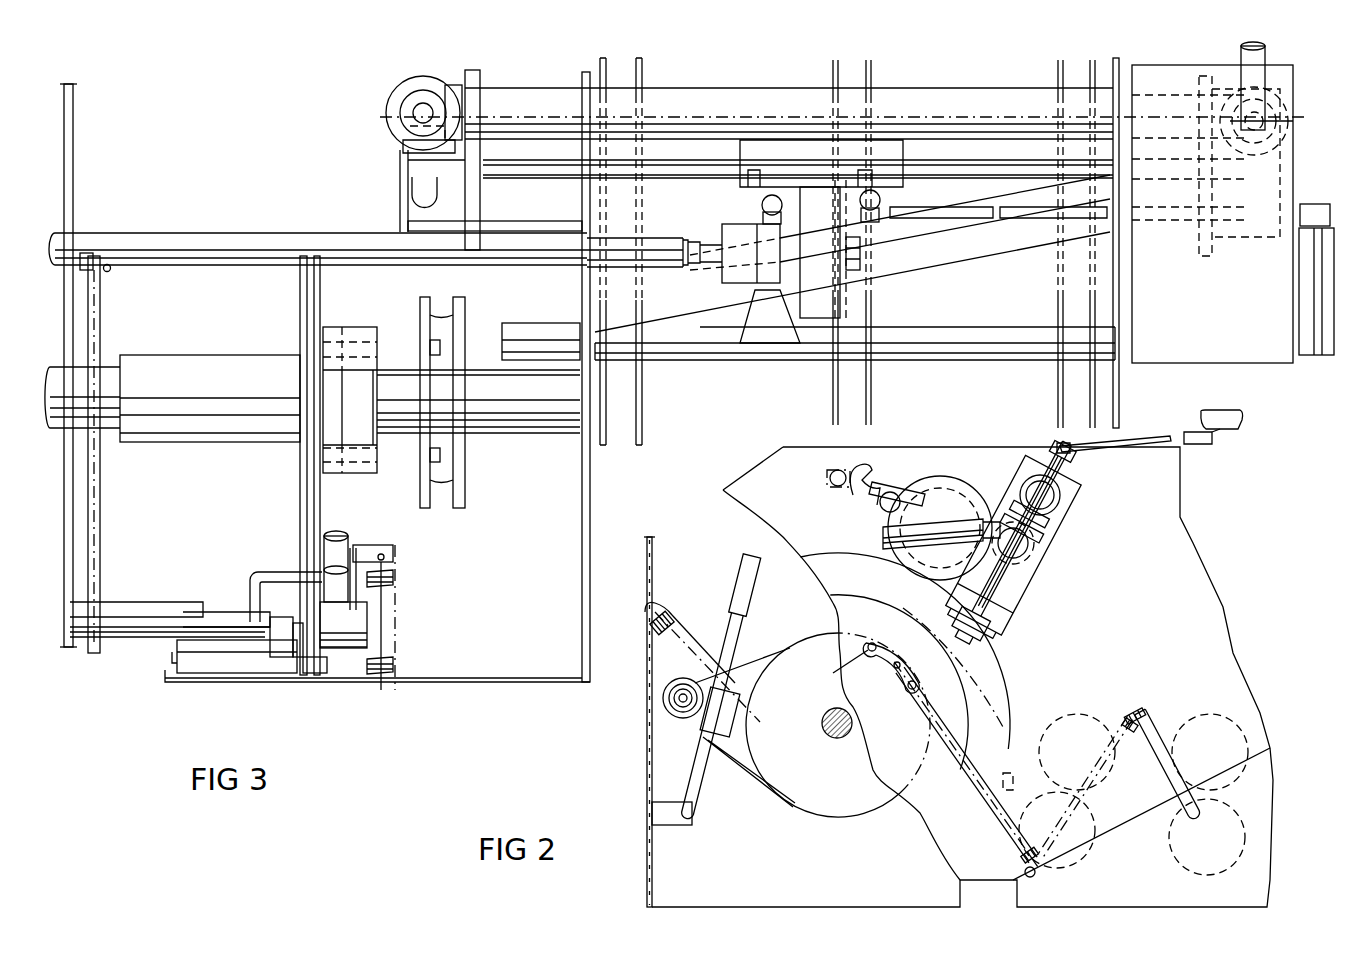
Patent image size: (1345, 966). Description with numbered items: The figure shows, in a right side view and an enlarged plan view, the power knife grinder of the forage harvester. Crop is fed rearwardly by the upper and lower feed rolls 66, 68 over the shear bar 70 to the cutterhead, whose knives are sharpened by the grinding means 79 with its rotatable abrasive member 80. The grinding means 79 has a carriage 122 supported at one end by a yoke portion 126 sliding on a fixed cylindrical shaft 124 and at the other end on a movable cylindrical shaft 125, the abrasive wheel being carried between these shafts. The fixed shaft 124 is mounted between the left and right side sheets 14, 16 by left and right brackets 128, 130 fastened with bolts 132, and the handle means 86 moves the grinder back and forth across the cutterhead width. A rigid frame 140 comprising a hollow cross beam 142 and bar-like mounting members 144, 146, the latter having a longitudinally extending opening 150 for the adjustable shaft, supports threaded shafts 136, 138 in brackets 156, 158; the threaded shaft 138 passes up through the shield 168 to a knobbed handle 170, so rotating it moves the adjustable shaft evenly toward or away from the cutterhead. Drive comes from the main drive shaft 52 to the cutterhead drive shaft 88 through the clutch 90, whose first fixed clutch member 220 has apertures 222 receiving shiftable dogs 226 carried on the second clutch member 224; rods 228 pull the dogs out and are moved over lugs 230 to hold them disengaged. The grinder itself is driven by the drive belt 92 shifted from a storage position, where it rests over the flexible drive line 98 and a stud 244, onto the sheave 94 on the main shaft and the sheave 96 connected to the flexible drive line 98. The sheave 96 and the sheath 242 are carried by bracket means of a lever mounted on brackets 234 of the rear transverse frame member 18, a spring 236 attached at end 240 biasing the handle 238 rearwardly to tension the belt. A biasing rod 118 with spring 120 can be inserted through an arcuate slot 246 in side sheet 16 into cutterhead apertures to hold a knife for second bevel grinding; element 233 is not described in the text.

In FIG. 3, the left side sheet 14 is at (575, 286).
In FIG. 3, the right side sheet 16 is at (1119, 294).
In FIG. 2, the right side sheet 16 is at (1197, 573).
In FIG. 3, the rear transverse frame member 18 is at (480, 685).
In FIG. 2, the rear transverse frame member 18 is at (655, 709).
In FIG. 3, the main drive shaft 52 is at (215, 362).
In FIG. 2, the upper feed roll 66 is at (1072, 713).
In FIG. 2, the lower feed roll 68 is at (1072, 866).
In FIG. 2, the shear bar 70 is at (1024, 782).
In FIG. 3, the grinding means 79 is at (686, 223).
In FIG. 3, the rotatable abrasive member 80 is at (818, 320).
In FIG. 3, the handle means 86 is at (1311, 368).
In FIG. 2, the handle means 86 is at (872, 538).
In FIG. 3, the cutterhead drive shaft 88 is at (555, 438).
In FIG. 3, the clutch 90 is at (395, 291).
In FIG. 3, the grinding means drive belt 92 is at (97, 533).
In FIG. 3, the sheave 94 is at (298, 285).
In FIG. 3, the sheave 96 is at (318, 676).
In FIG. 3, the flexible drive line 98 is at (232, 245).
In FIG. 2, the rod 118 is at (911, 653).
In FIG. 2, the spring 120 is at (940, 731).
In FIG. 3, the carriage 122 is at (748, 230).
In FIG. 3, the fixed cylindrical shaft 124 is at (912, 362).
In FIG. 3, the movable cylindrical shaft 125 is at (683, 147).
In FIG. 2, the movable cylindrical shaft 125 is at (1047, 570).
In FIG. 3, the yoke portion 126 is at (760, 335).
In FIG. 3, the left bracket 128 is at (607, 410).
In FIG. 3, the right bracket 130 is at (1110, 407).
In FIG. 2, the right bracket 130 is at (848, 490).
In FIG. 2, the bolts 132 is at (862, 480).
In FIG. 3, the threaded shaft 136 is at (413, 184).
In FIG. 3, the threaded shaft 138 is at (1253, 75).
In FIG. 2, the threaded shaft 138 is at (1087, 473).
In FIG. 3, the rigid frame 140 is at (424, 75).
In FIG. 3, the cross beam 142 is at (518, 88).
In FIG. 3, the mounting member 144 is at (481, 200).
In FIG. 3, the mounting member 146 is at (1210, 250).
In FIG. 2, the mounting member 146 is at (1000, 628).
In FIG. 2, the longitudinally extending opening 150 is at (1027, 595).
In FIG. 2, the bracket 156 is at (1060, 537).
In FIG. 2, the bracket 158 is at (1007, 623).
In FIG. 3, the shield 168 is at (1178, 65).
In FIG. 2, the knobbed handle 170 is at (1232, 432).
In FIG. 3, the first fixed clutch member 220 is at (325, 362).
In FIG. 3, the apertures 222 is at (345, 345).
In FIG. 3, the second clutch member 224 is at (388, 326).
In FIG. 3, the shiftable dogs 226 is at (392, 383).
In FIG. 3, the rods 228 is at (466, 302).
In FIG. 3, the lugs 230 is at (407, 383).
In FIG. 3, the piston rod 233 is at (342, 590).
In FIG. 2, the piston rod 233 is at (684, 770).
In FIG. 3, the brackets 234 is at (230, 675).
In FIG. 2, the brackets 234 is at (672, 827).
In FIG. 3, the spring 236 is at (395, 660).
In FIG. 2, the spring 236 is at (688, 633).
In FIG. 3, the handle 238 is at (326, 538).
In FIG. 2, the handle 238 is at (755, 552).
In FIG. 3, the bracket means end 240 is at (395, 557).
In FIG. 3, the sheath 242 is at (223, 610).
In FIG. 3, the stud 244 is at (82, 250).
In FIG. 2, the stud 244 is at (812, 725).
In FIG. 2, the arcuate slot 246 is at (876, 673).